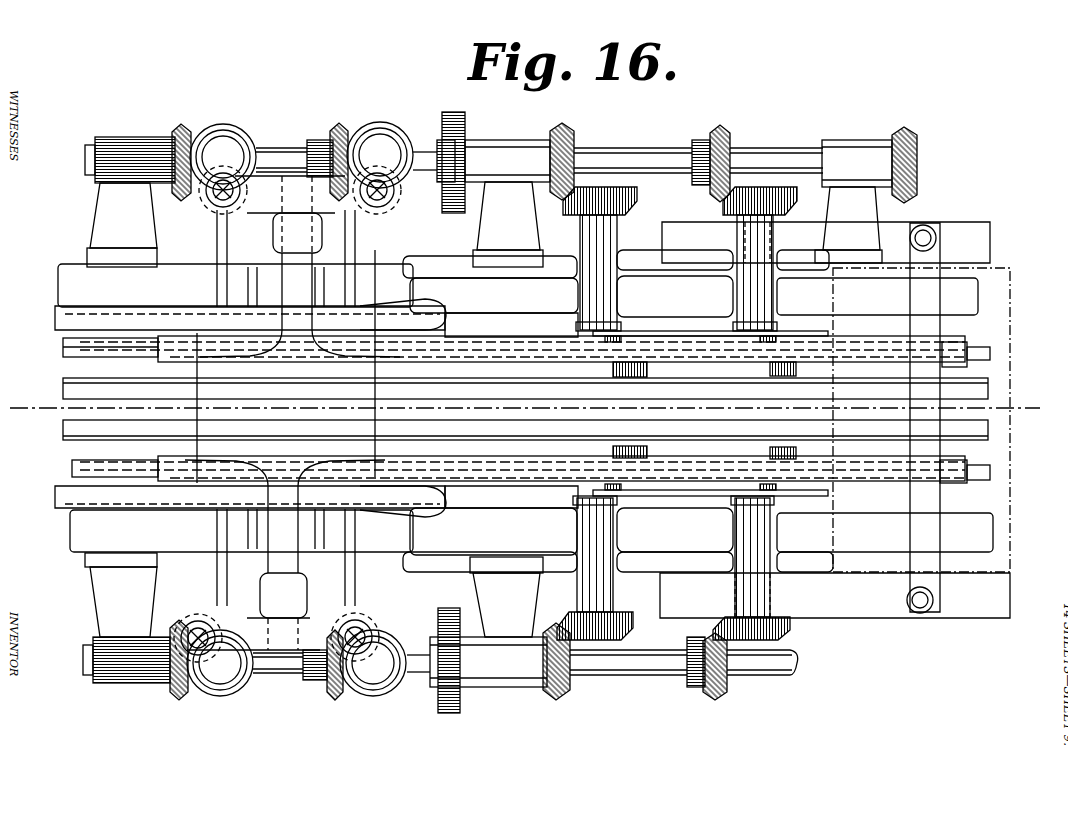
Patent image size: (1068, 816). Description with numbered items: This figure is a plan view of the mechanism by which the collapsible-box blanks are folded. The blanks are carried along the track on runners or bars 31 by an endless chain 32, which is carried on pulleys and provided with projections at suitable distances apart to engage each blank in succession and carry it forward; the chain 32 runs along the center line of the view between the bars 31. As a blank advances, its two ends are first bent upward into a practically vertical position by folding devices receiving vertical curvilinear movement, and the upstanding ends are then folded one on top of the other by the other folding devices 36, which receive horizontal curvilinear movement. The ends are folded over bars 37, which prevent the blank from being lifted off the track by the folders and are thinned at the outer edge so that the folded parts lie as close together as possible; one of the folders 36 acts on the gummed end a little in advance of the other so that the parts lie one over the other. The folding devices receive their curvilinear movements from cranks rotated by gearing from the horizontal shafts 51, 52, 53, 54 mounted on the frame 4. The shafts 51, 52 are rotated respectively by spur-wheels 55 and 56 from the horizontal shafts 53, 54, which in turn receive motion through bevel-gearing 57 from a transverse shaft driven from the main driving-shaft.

The frame 4 is at (532, 409).
The runners or bars 31 is at (72, 347).
The endless chain 32 is at (537, 408).
The folding devices 36 is at (292, 413).
The bars 37 is at (540, 350).
The horizontal shaft 51 is at (278, 158).
The horizontal shaft 52 is at (283, 667).
The horizontal shaft 53 is at (612, 160).
The horizontal shaft 54 is at (645, 665).
The spur-wheel 55 is at (465, 123).
The spur-wheel 56 is at (458, 703).
The bevel-gearing 57 is at (919, 160).